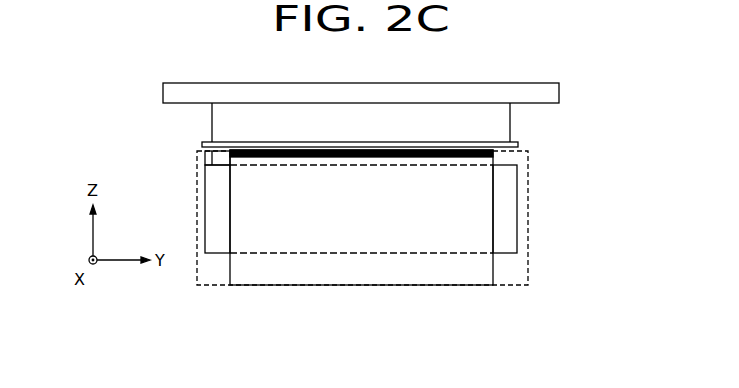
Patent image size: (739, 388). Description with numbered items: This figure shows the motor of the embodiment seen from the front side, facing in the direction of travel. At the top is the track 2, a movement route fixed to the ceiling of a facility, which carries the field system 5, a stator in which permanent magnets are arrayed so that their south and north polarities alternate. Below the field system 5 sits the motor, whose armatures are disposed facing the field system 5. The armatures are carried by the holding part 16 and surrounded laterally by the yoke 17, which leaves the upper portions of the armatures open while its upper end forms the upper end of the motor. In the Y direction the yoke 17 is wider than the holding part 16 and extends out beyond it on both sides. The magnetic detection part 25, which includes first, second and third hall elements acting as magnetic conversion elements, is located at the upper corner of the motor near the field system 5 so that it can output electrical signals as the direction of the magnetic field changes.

The track 2 is at (353, 93).
The field system 5 is at (550, 104).
The magnetic detection part 25 is at (204, 156).
The holding part 16 is at (517, 198).
The yoke 17 is at (528, 230).